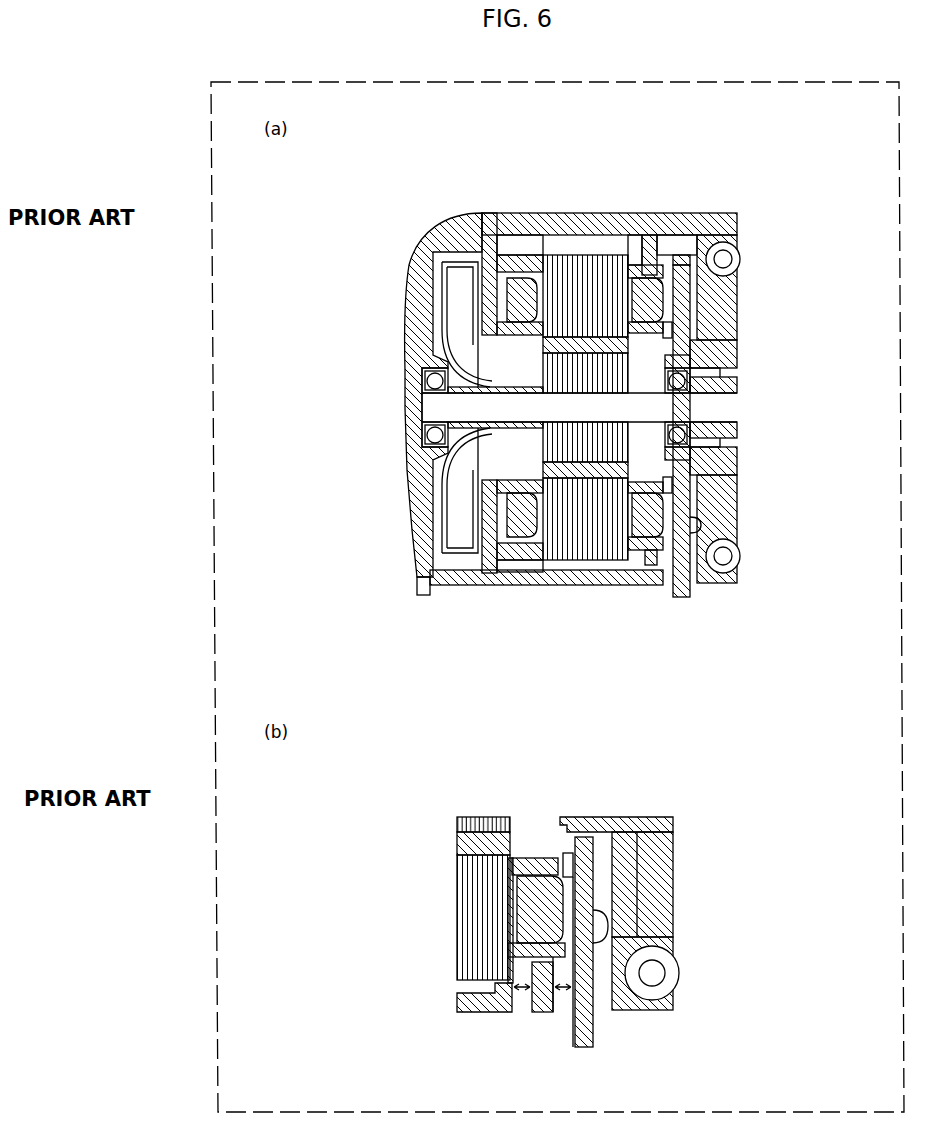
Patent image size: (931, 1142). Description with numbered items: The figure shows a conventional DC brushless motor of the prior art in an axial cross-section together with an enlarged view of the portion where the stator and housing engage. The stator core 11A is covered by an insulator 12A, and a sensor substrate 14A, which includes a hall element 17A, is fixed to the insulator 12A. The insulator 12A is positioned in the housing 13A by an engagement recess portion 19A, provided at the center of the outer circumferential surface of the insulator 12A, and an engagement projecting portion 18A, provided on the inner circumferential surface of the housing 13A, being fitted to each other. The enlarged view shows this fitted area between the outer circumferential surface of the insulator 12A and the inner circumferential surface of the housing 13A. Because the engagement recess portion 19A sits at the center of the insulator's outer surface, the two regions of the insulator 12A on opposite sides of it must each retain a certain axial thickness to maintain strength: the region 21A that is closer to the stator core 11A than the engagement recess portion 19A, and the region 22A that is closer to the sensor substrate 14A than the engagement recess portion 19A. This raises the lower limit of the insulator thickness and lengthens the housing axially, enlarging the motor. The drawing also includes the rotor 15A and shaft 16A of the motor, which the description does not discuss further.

The stator core 11A is at (587, 255).
The insulator 12A is at (648, 333).
The housing 13A is at (726, 207).
The sensor substrate 14A is at (680, 292).
The rotor 15A is at (550, 367).
The shaft 16A is at (480, 409).
The hall element 17A is at (668, 330).
The engagement projecting portion 18A is at (660, 262).
The engagement recess portion 19A is at (738, 262).
The region 21A is at (514, 1012).
The region 22A is at (567, 997).